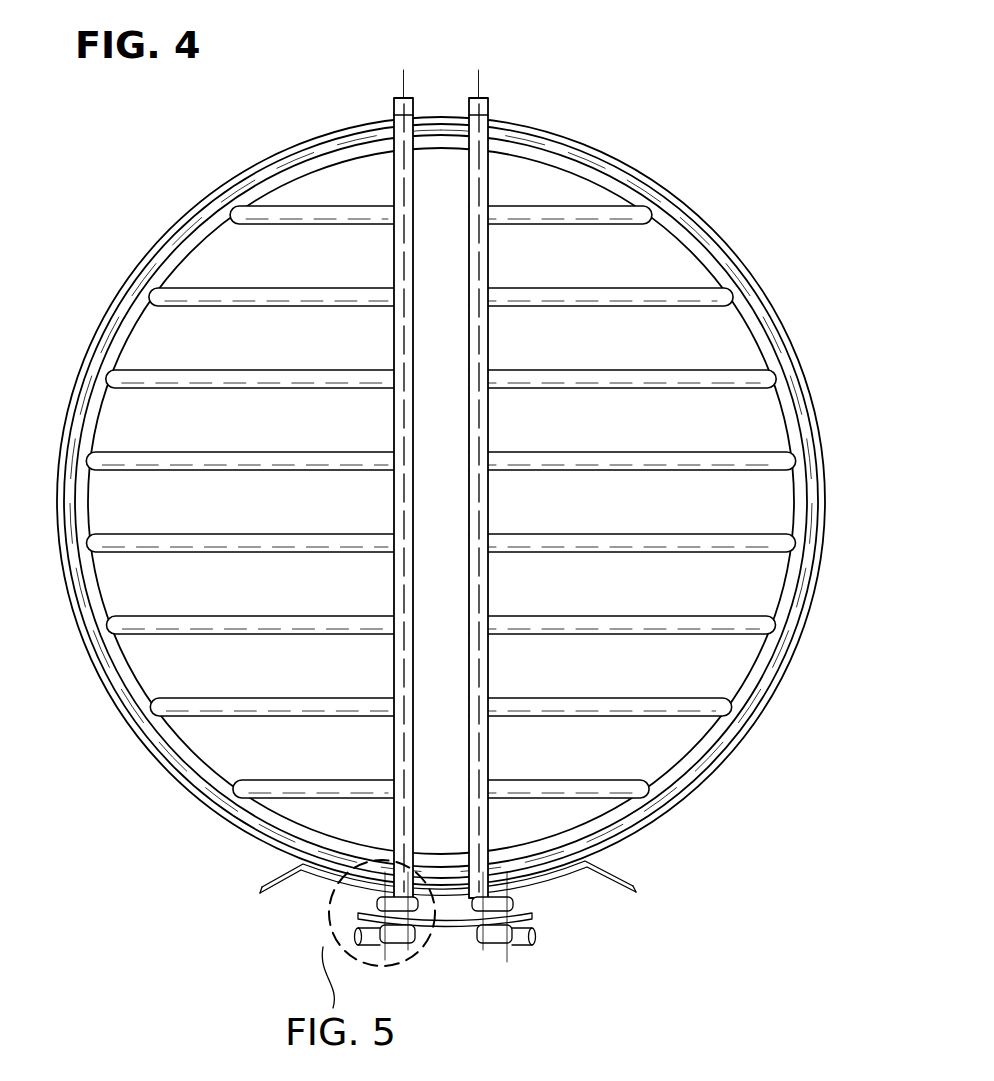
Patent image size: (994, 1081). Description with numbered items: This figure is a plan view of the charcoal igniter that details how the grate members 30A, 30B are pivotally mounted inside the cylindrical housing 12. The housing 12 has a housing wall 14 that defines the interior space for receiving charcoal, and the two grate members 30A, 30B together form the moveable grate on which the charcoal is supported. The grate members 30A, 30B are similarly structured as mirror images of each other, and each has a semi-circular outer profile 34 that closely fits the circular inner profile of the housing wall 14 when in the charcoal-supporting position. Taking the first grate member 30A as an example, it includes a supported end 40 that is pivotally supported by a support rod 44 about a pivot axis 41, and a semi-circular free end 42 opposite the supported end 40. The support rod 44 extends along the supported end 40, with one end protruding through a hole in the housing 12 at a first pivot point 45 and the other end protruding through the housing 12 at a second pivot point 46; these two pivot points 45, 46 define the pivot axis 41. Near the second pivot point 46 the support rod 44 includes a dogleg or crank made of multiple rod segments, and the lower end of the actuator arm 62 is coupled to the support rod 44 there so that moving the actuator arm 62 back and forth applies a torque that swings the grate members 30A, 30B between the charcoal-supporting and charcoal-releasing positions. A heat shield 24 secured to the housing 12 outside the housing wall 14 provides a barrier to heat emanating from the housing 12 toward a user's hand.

The cylindrical housing 12 is at (757, 281).
The housing wall 14 is at (650, 176).
The heat shield 24 is at (602, 882).
The first grate member 30A is at (313, 152).
The second grate member 30B is at (556, 148).
The outer profile 34 is at (120, 663).
The supported end 40 is at (495, 498).
The pivot axis 41 is at (405, 548).
The free end 42 is at (78, 383).
The support rod 44 is at (413, 482).
The first pivot point 45 is at (382, 108).
The second pivot point 46 is at (391, 858).
The actuator arm 62 is at (452, 925).